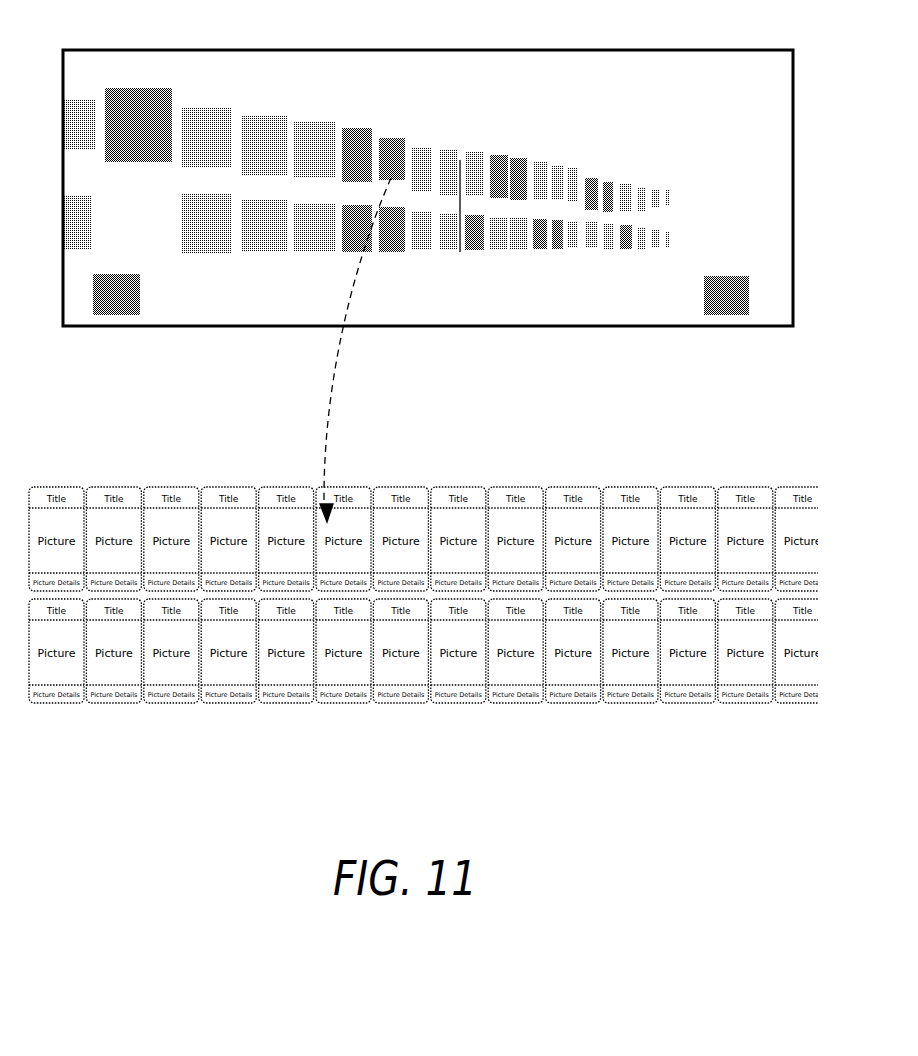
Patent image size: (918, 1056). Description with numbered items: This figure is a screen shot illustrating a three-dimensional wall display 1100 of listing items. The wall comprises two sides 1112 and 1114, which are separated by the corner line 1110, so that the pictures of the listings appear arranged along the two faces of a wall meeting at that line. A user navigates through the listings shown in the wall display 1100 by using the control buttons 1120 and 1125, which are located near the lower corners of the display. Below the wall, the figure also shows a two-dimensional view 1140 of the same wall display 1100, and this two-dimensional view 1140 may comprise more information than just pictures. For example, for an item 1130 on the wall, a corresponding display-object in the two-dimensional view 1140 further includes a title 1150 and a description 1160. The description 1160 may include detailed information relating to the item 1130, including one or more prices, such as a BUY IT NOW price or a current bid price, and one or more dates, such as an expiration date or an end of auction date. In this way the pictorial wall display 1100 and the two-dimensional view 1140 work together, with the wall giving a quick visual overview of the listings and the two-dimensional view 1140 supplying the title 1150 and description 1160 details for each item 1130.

The 3-D wall display 1100 is at (413, 190).
The corner line 1110 is at (460, 160).
The first side of the 3-D wall 1112 is at (367, 141).
The second side of the 3-D wall 1114 is at (583, 163).
The control button 1120 is at (702, 304).
The control button 1125 is at (97, 312).
The item 1130 is at (392, 140).
The two-dimensional view 1140 is at (429, 560).
The title 1150 is at (319, 517).
The description 1160 is at (336, 578).